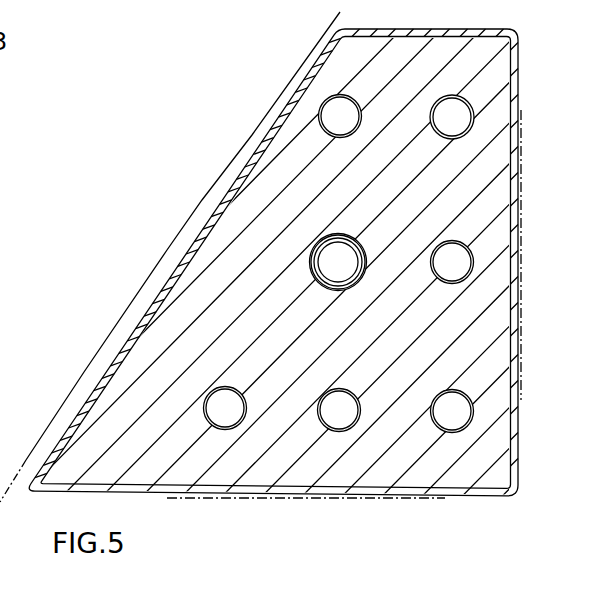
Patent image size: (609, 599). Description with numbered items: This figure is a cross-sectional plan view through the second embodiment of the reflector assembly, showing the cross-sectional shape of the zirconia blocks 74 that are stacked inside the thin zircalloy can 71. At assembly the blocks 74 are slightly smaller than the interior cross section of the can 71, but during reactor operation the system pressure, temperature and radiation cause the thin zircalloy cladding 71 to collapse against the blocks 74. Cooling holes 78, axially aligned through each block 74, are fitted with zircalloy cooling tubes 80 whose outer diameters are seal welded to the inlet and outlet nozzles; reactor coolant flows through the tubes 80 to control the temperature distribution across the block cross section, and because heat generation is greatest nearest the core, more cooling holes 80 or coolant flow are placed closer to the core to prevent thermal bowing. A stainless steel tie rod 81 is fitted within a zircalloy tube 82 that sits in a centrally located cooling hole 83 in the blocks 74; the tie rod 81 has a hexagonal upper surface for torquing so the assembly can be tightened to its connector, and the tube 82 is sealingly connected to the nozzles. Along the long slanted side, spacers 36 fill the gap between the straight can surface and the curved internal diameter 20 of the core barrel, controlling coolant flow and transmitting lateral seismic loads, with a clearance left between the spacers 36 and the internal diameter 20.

The internal diameter of the core barrel 20 is at (12, 485).
The spacer 36 is at (213, 195).
The zircalloy can 71 is at (518, 238).
The zirconia block 74 is at (292, 157).
The cooling hole 78 is at (460, 130).
The zircalloy cooling tube 80 is at (486, 83).
The stainless steel tie rod 81 is at (347, 270).
The zircalloy tube 82 is at (338, 234).
The centrally located cooling hole 83 is at (361, 250).